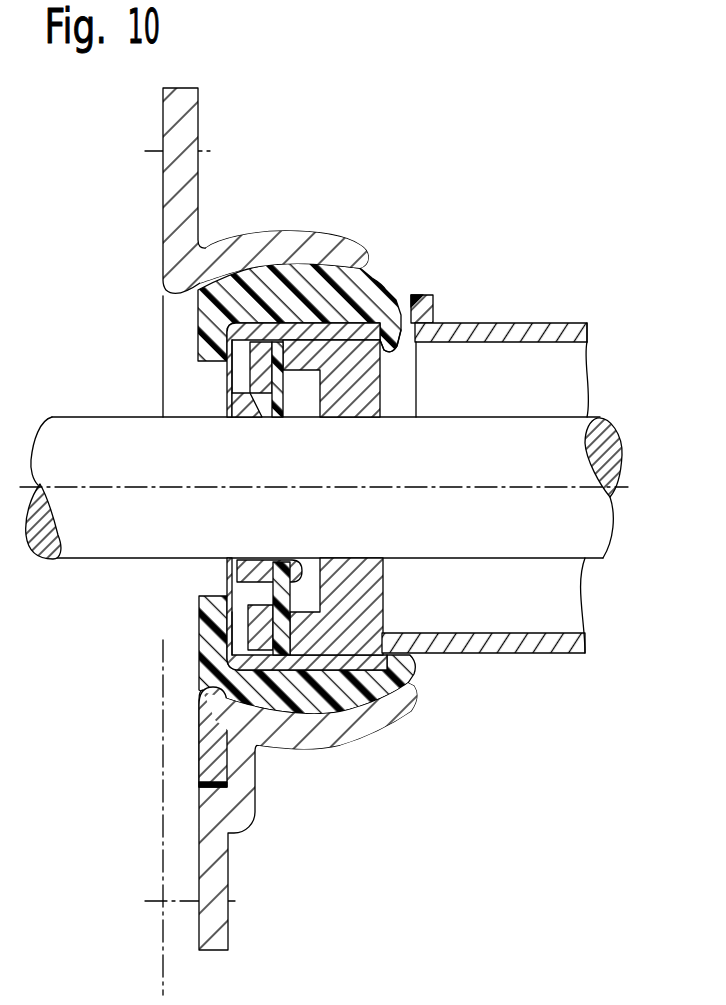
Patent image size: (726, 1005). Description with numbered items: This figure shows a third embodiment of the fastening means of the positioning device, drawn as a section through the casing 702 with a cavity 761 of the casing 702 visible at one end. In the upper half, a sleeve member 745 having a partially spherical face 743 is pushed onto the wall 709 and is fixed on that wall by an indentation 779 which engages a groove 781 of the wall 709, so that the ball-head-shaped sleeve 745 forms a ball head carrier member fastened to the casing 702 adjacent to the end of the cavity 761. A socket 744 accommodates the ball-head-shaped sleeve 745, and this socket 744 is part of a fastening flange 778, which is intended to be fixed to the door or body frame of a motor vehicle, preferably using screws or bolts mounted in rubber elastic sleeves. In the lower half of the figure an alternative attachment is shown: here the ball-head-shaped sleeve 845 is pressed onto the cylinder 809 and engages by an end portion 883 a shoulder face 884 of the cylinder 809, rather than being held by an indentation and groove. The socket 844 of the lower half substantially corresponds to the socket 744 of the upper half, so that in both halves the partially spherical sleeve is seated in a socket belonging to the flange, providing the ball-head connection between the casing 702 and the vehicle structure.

The fastening flange 778 is at (183, 135).
The sleeve member 745 is at (274, 272).
The socket 744 is at (340, 243).
The partially spherical face 743 is at (372, 298).
The indentation 779 is at (400, 294).
The wall 709 is at (510, 323).
The casing 702 is at (573, 322).
The groove 781 is at (400, 353).
The cavity 761 is at (553, 388).
The shoulder face 884 is at (378, 662).
The end portion 883 is at (409, 672).
The cylinder 809 is at (522, 654).
The ball-head-shaped sleeve 845 is at (362, 730).
The socket 844 is at (288, 728).